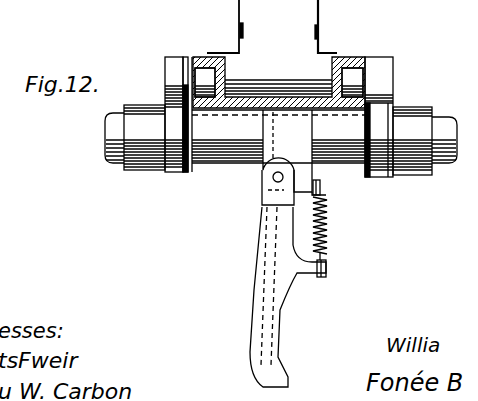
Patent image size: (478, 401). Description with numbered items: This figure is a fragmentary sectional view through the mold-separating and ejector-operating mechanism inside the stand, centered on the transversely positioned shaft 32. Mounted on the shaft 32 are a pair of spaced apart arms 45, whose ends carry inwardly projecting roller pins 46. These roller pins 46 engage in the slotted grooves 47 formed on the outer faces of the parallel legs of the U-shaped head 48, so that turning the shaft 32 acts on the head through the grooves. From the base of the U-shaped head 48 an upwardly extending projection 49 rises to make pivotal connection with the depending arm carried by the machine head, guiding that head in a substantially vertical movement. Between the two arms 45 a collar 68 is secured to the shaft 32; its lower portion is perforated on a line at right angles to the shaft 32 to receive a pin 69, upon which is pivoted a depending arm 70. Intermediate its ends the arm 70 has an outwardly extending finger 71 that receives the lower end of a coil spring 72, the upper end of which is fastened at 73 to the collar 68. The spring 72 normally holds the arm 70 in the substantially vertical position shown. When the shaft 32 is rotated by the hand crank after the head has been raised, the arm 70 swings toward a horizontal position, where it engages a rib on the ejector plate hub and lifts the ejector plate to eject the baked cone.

The shaft 32 is at (447, 124).
The arms 45 is at (172, 125).
The roller pins 46 is at (205, 78).
The slotted grooves 47 is at (221, 73).
The U-shaped head 48 is at (335, 57).
The projection 49 is at (246, 26).
The collar 68 is at (275, 147).
The pin 69 is at (273, 181).
The depending arm 70 is at (278, 306).
The finger 71 is at (326, 266).
The coil spring 72 is at (328, 215).
The fastening point 73 is at (322, 189).